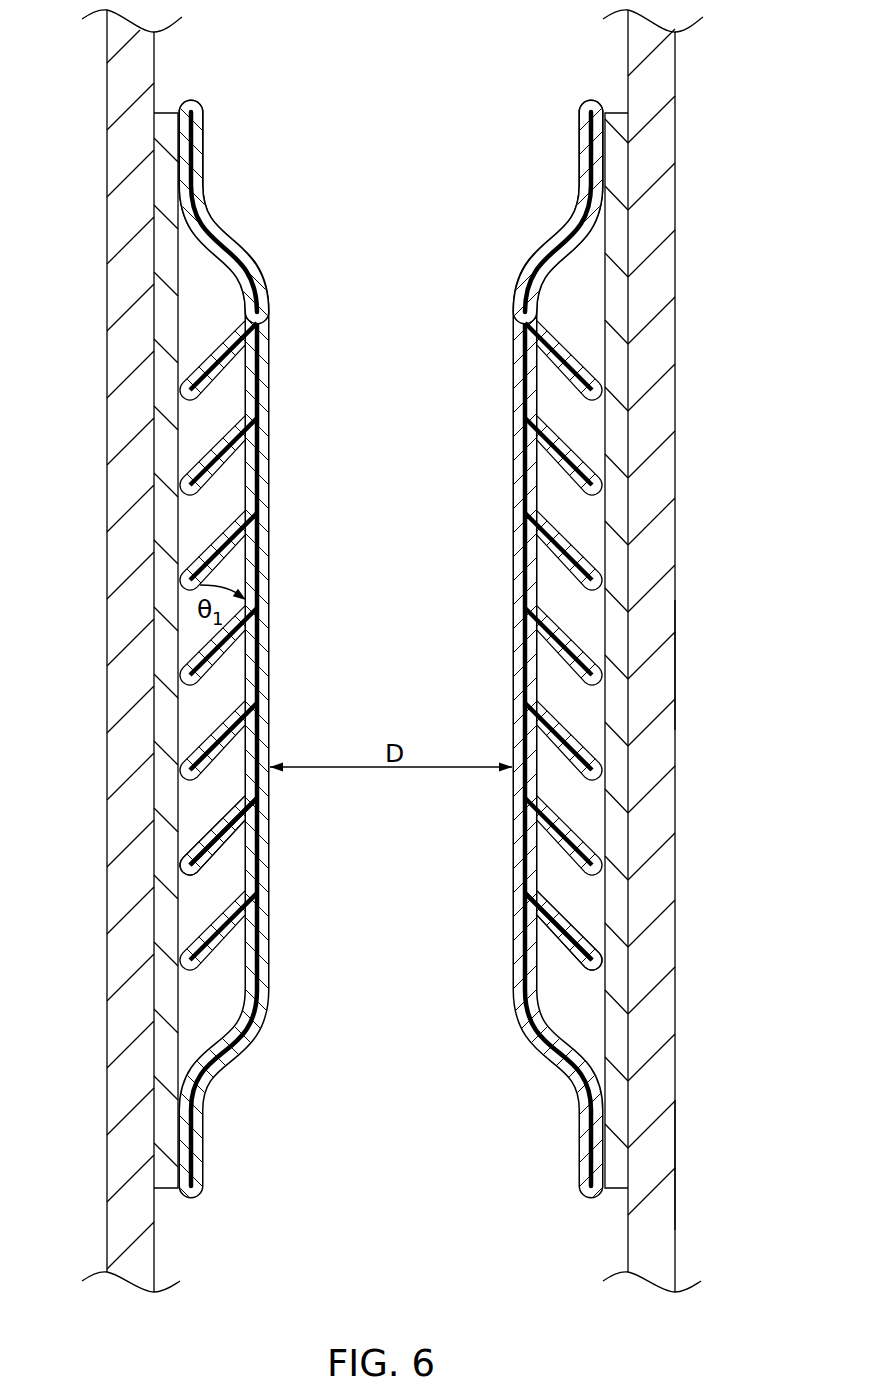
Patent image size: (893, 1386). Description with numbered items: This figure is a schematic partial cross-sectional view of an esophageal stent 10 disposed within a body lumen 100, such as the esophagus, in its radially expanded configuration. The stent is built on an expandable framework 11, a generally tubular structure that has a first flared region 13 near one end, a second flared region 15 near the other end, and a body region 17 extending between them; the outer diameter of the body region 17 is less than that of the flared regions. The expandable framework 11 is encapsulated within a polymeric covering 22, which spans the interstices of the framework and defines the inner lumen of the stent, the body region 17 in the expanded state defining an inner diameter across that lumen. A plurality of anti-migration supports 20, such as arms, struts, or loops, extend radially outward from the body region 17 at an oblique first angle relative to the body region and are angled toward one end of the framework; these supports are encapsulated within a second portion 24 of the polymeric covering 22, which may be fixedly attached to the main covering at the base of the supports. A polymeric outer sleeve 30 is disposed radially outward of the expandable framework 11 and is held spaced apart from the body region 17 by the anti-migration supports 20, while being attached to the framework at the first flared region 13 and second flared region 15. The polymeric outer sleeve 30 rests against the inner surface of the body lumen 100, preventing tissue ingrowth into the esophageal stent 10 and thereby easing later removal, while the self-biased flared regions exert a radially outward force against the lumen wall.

The esophageal stent 10 is at (394, 629).
The expandable framework 11 is at (233, 228).
The first flared region 13 is at (706, 137).
The second flared region 15 is at (706, 1165).
The body region 17 is at (706, 664).
The anti-migration supports 20 is at (205, 356).
The polymeric covering 22 is at (268, 652).
The second portion of the polymeric covering 24 is at (205, 832).
The polymeric outer sleeve 30 is at (167, 253).
The body lumen 100 is at (118, 553).